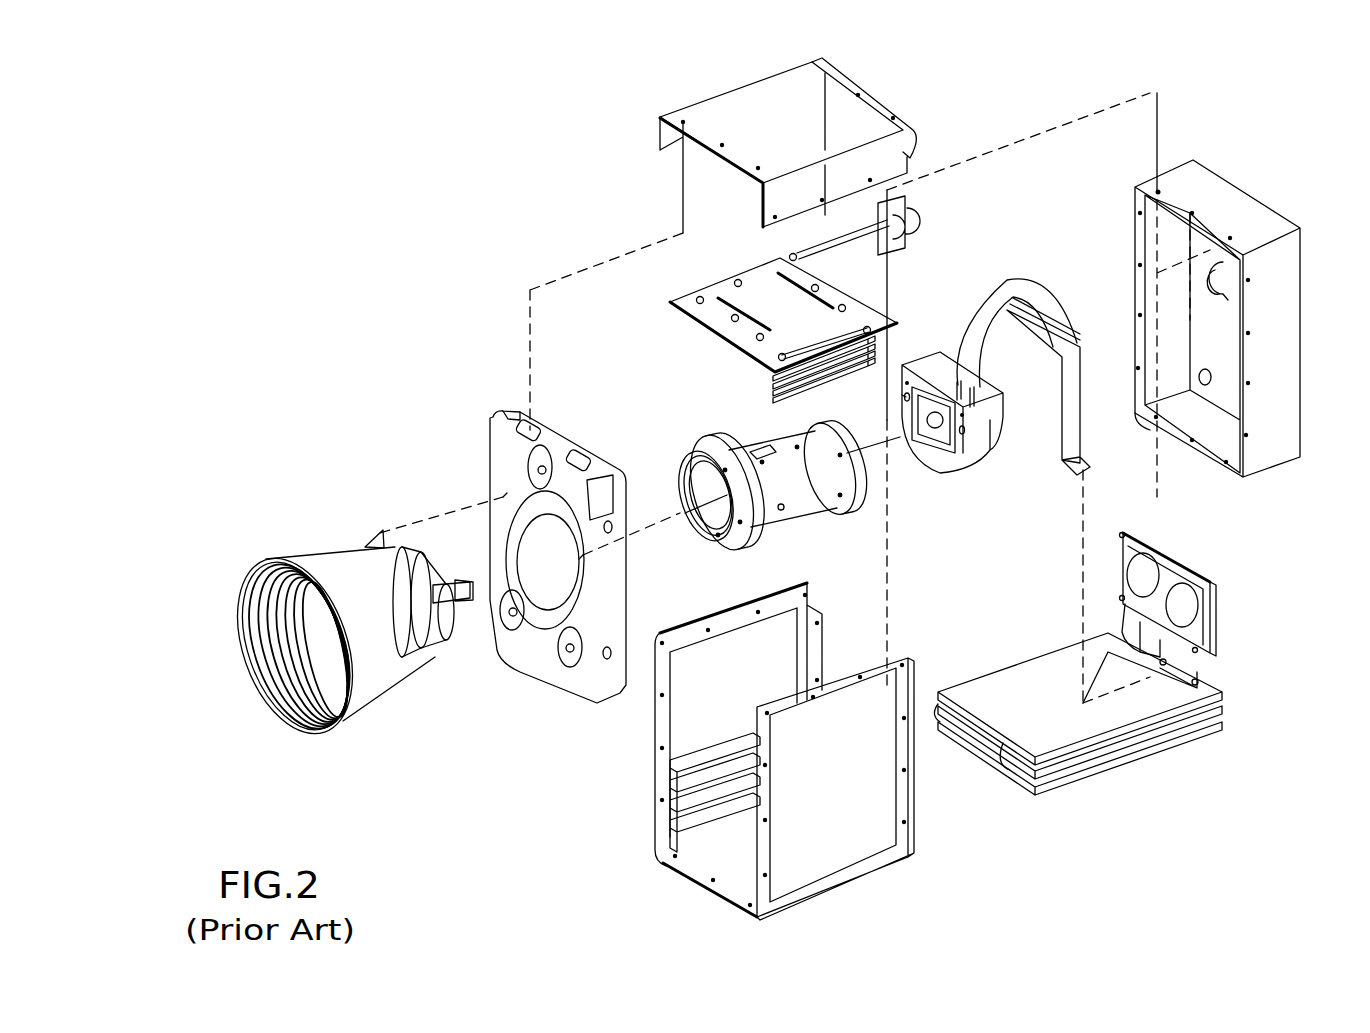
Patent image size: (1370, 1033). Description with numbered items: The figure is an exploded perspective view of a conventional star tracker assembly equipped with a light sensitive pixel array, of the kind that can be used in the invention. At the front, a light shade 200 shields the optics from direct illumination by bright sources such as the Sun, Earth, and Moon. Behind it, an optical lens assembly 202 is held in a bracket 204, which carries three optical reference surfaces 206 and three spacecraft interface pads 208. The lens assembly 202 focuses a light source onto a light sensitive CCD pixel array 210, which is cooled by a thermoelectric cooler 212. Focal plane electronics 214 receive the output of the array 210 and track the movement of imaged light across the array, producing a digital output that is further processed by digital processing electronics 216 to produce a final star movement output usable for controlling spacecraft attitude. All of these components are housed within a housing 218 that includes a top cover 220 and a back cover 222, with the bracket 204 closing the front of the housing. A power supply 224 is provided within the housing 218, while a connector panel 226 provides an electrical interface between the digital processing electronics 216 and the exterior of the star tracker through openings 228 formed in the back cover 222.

The light shade 200 is at (350, 682).
The optical lens assembly 202 is at (783, 533).
The bracket 204 is at (480, 543).
The optical reference surfaces 206 is at (603, 543).
The spacecraft interface pads 208 is at (571, 664).
The light sensitive CCD pixel array 210 is at (927, 430).
The thermoelectric cooler 212 is at (905, 397).
The focal plane electronics 214 is at (1060, 327).
The digital processing electronics 216 is at (1127, 763).
The housing 218 is at (673, 868).
The top cover 220 is at (707, 97).
The back cover 222 is at (1225, 180).
The power supply 224 is at (700, 287).
The connector panel 226 is at (1213, 597).
The openings 228 is at (1233, 290).